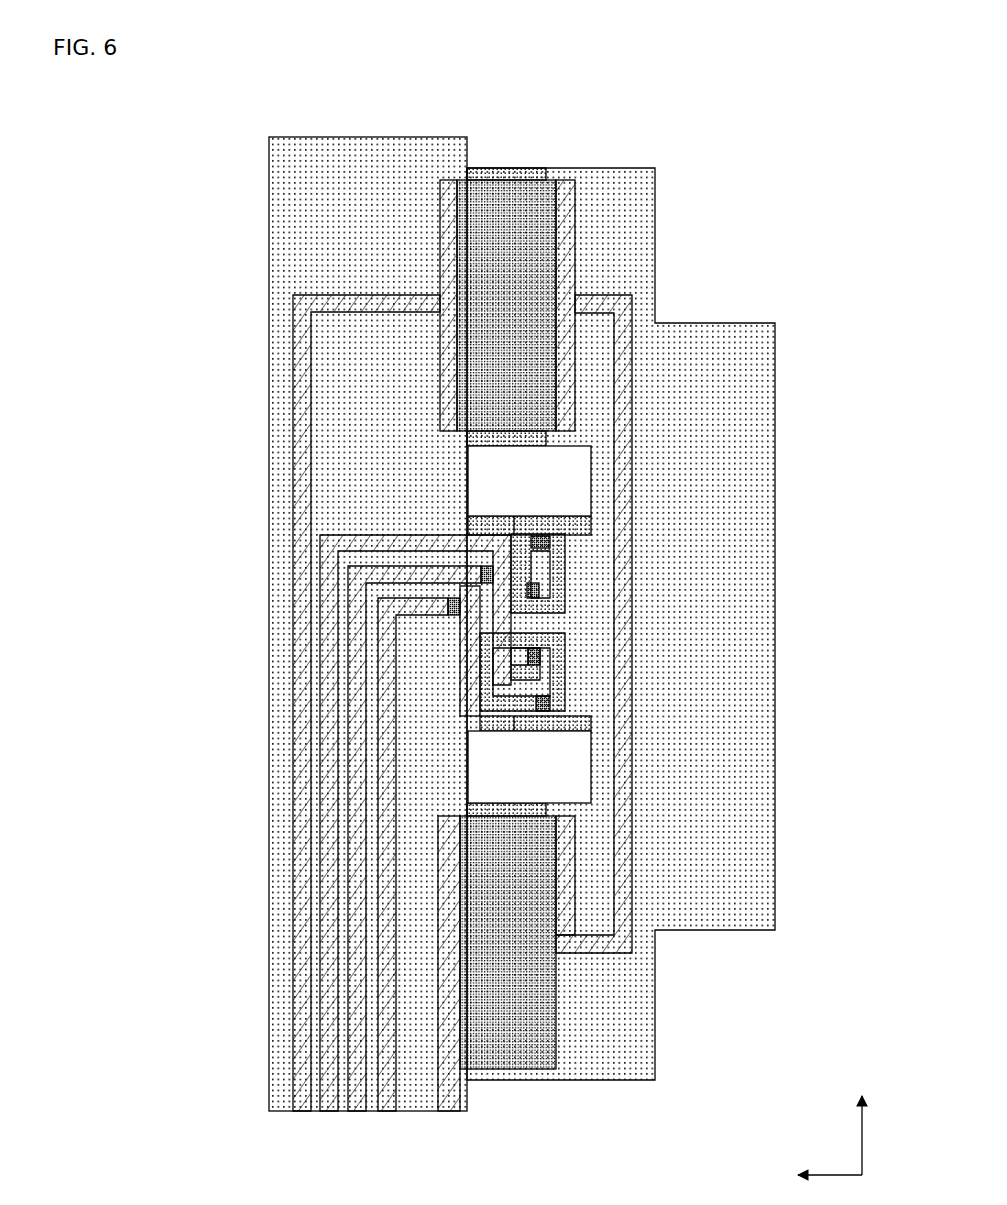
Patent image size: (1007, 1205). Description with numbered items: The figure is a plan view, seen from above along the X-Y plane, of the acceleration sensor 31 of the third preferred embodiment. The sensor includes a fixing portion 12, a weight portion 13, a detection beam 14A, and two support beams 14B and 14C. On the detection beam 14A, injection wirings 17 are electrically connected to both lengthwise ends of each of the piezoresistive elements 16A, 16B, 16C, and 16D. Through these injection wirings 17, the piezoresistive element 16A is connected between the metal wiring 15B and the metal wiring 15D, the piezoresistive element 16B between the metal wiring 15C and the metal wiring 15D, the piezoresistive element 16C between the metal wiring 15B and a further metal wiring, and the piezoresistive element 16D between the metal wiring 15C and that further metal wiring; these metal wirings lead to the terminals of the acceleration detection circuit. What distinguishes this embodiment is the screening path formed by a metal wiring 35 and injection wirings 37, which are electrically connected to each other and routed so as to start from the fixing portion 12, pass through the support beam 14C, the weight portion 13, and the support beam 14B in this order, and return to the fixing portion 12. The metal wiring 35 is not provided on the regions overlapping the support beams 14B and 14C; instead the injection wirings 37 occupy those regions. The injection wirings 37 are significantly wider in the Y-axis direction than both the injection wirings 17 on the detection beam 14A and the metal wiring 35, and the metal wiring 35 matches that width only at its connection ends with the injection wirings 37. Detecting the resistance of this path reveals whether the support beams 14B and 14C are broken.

The fixing portion 12 is at (261, 164).
The weight portion 13 is at (646, 166).
The detection beam 14A is at (550, 507).
The support beam 14B is at (507, 797).
The support beam 14C is at (503, 163).
The metal wiring 15B is at (323, 664).
The metal wiring 15C is at (350, 697).
The metal wiring 15D is at (523, 625).
The piezoresistive element 16A is at (532, 534).
The piezoresistive element 16B is at (530, 582).
The piezoresistive element 16C is at (530, 648).
The piezoresistive element 16D is at (534, 697).
The injection wirings 17 is at (517, 528).
The acceleration sensor 31 is at (230, 96).
The metal wiring 35 is at (290, 639).
The injection wirings 37 is at (490, 240).